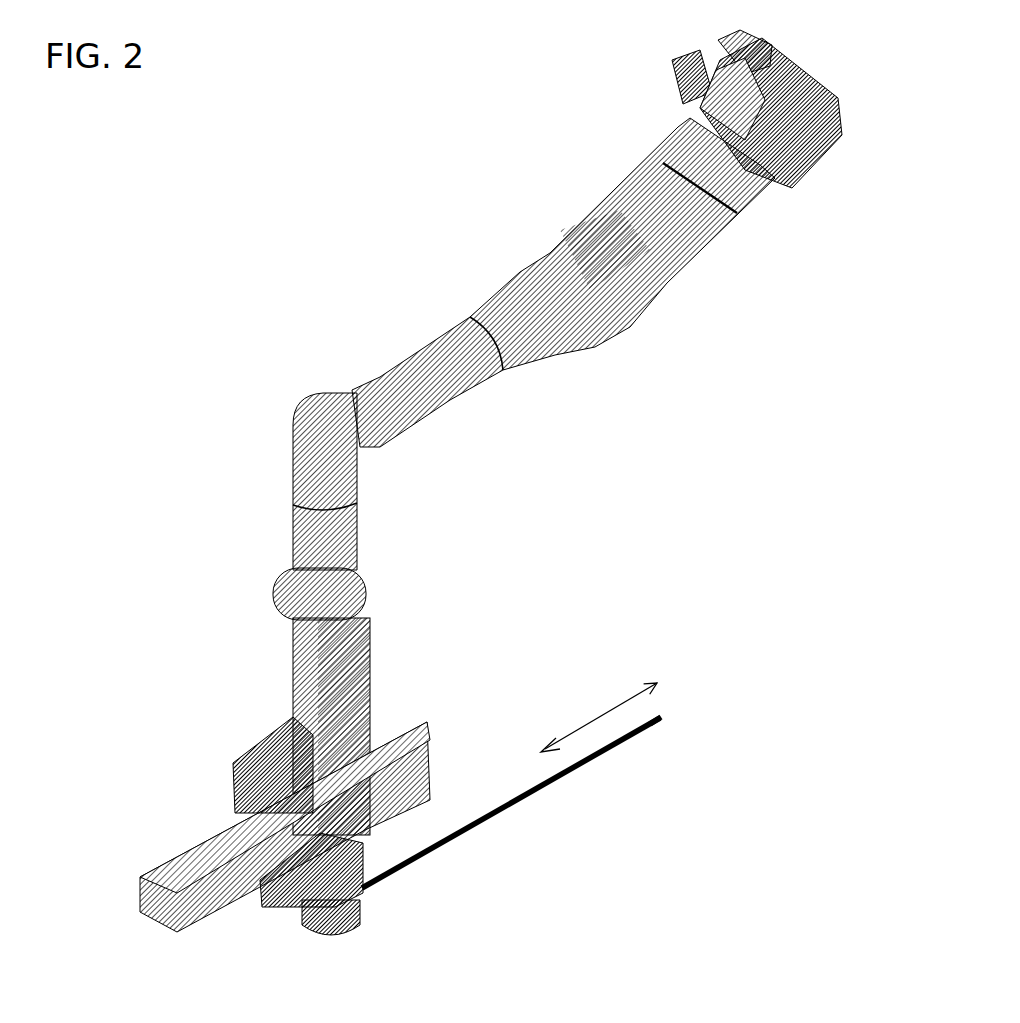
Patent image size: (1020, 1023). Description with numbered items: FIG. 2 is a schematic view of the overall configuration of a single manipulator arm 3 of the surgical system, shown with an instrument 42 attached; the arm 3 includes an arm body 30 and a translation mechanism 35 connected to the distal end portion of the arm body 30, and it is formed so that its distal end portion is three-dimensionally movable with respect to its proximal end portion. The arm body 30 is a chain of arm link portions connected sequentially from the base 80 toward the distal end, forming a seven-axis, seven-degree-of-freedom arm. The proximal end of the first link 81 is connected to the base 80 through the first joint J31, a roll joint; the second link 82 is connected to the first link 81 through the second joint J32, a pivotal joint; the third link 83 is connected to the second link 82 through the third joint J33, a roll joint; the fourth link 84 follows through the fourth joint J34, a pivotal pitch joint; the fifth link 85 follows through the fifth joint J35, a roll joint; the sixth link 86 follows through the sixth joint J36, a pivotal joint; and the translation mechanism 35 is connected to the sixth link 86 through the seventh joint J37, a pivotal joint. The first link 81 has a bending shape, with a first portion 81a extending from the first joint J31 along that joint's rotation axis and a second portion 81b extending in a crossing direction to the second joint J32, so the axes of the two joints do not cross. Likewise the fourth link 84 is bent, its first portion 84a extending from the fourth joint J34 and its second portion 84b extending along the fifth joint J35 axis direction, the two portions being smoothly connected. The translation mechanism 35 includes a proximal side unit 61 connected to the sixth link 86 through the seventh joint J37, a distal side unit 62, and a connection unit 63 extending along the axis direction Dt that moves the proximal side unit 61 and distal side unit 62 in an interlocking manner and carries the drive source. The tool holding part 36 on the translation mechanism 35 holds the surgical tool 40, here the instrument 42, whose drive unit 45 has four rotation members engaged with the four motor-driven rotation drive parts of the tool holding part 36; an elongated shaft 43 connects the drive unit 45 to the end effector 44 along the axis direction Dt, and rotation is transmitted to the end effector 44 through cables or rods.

The arm 3 is at (402, 113).
The arm body 30 is at (300, 292).
The base 80 is at (803, 143).
The first link 81 is at (647, 202).
The first portion 81a is at (720, 248).
The second portion 81b is at (667, 284).
The second link 82 is at (518, 293).
The third link 83 is at (428, 335).
The fourth link 84 is at (315, 410).
The first portion 84a is at (348, 382).
The second portion 84b is at (292, 480).
The fifth link 85 is at (295, 530).
The sixth link 86 is at (368, 688).
The first joint J31 is at (742, 220).
The second joint J32 is at (630, 328).
The third joint J33 is at (505, 377).
The fourth joint J34 is at (400, 450).
The fifth joint J35 is at (362, 505).
The sixth joint J36 is at (365, 594).
The seventh joint J37 is at (270, 707).
The translation mechanism 35 is at (162, 745).
The proximal side unit 61 is at (258, 752).
The distal side unit 62 is at (268, 905).
The connection unit 63 is at (172, 850).
The tool holding part 36 is at (366, 858).
The drive unit 45 is at (358, 925).
The surgical tool 40 is at (559, 843).
The instrument 42 is at (559, 843).
The shaft 43 is at (533, 800).
The end effector 44 is at (665, 725).